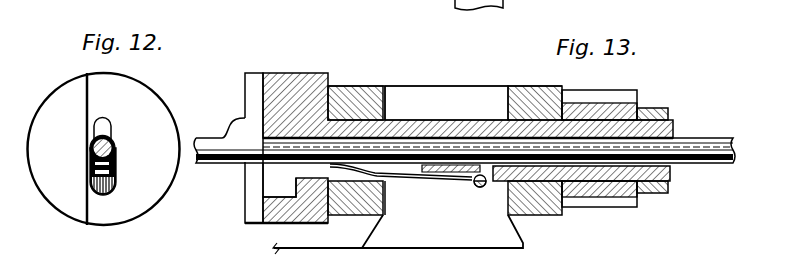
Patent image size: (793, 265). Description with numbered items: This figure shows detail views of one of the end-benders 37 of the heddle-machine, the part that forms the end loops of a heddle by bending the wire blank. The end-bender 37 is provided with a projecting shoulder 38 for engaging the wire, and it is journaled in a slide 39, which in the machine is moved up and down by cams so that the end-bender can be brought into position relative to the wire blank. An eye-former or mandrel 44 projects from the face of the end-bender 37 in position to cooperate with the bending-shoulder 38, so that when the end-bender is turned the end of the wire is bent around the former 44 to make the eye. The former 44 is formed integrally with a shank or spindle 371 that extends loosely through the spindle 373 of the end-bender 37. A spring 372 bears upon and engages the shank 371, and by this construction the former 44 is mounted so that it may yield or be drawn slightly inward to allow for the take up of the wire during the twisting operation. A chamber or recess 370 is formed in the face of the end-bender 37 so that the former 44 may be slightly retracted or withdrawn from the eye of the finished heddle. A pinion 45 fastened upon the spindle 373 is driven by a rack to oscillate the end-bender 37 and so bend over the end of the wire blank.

In FIG. 12, the end-bender 37 is at (120, 145).
In FIG. 13, the end-bender 37 is at (283, 80).
In FIG. 12, the projecting shoulder 38 is at (104, 149).
In FIG. 13, the projecting shoulder 38 is at (248, 83).
In FIG. 13, the slide 39 is at (398, 234).
In FIG. 12, the eye-former 44 is at (110, 142).
In FIG. 13, the eye-former 44 is at (464, 140).
In FIG. 13, the pinion 45 is at (612, 100).
In FIG. 12, the chamber 370 is at (117, 180).
In FIG. 13, the chamber 370 is at (270, 169).
In FIG. 13, the shank 371 is at (410, 150).
In FIG. 12, the spring 372 is at (93, 170).
In FIG. 13, the spring 372 is at (407, 174).
In FIG. 13, the spindle 373 is at (447, 120).